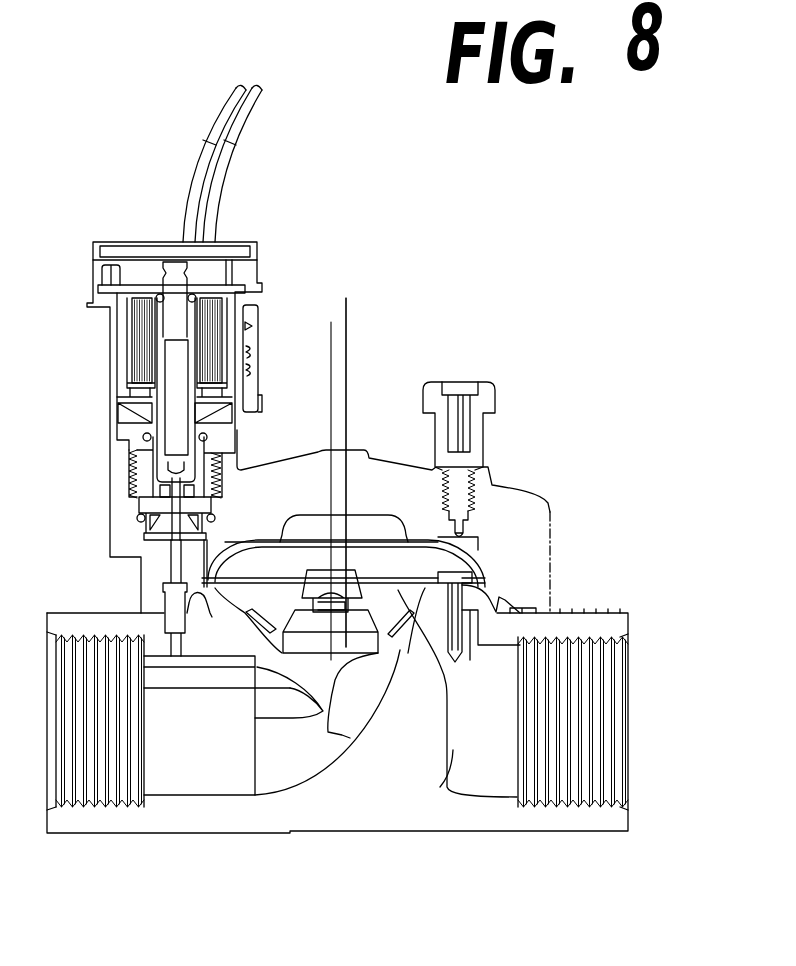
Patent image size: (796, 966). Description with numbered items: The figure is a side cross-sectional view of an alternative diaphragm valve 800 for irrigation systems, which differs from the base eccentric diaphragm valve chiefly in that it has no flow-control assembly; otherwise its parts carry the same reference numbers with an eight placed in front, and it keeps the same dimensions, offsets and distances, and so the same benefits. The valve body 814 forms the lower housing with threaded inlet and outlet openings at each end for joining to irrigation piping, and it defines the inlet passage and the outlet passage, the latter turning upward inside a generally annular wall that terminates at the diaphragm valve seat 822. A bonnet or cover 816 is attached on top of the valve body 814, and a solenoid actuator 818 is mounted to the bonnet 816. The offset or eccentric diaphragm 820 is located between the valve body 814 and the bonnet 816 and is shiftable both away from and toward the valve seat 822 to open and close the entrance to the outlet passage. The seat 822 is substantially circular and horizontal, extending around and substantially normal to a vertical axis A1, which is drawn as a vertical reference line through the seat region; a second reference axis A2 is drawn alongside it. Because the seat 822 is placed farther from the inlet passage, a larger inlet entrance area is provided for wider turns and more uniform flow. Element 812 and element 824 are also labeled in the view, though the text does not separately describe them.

The alternative diaphragm valve 800 is at (493, 268).
The valve 812 is at (524, 315).
The valve body 814 is at (401, 814).
The bonnet or cover 816 is at (540, 537).
The solenoid actuator 818 is at (110, 377).
The offset or eccentric diaphragm 820 is at (350, 738).
The diaphragm valve seat 822 is at (415, 648).
The diaphragm chamber 824 is at (387, 603).
The vertical axis A1 is at (326, 342).
The second axis A2 is at (349, 318).